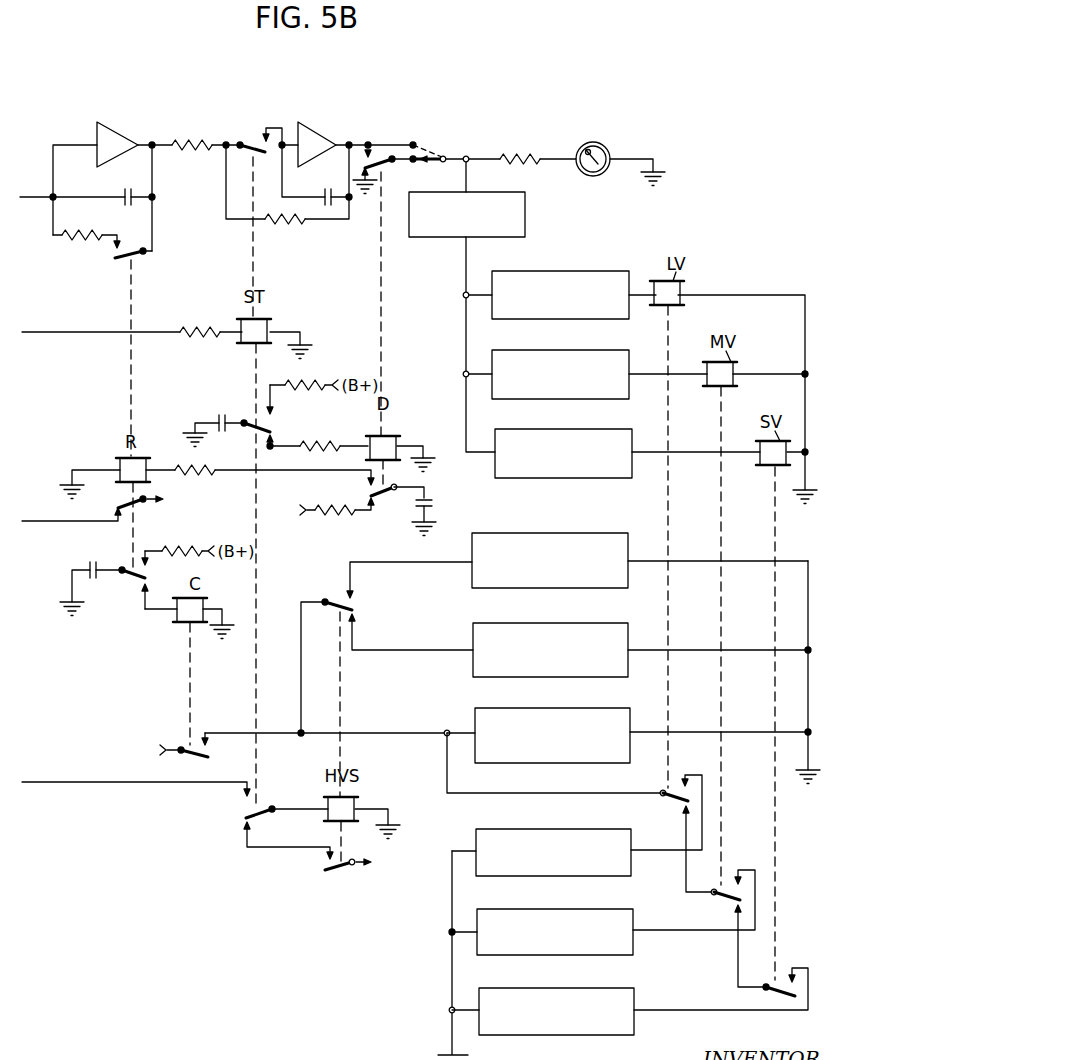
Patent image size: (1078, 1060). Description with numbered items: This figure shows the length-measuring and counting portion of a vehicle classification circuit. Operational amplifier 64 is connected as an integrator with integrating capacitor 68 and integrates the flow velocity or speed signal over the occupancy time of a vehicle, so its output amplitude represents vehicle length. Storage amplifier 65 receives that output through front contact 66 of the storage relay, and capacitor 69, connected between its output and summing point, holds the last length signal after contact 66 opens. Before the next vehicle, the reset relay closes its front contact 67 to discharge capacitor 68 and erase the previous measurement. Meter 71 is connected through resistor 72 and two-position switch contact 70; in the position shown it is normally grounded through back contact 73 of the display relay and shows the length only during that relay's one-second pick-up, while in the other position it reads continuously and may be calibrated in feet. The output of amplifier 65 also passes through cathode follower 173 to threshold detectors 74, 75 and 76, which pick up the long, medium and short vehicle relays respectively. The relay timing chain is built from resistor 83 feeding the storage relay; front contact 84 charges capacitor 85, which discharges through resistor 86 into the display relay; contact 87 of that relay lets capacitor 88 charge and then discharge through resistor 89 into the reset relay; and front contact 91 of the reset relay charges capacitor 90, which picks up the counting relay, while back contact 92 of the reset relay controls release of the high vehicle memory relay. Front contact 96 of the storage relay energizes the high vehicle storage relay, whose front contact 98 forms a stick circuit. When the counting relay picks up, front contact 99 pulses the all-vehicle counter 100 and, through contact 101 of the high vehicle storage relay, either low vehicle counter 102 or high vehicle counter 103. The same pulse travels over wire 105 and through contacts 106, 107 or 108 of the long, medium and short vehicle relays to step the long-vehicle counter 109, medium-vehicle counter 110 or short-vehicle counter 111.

The operational amplifier 64 is at (122, 135).
The storage amplifier 65 is at (321, 135).
The front contact of relay ST 66 is at (253, 143).
The front contact of relay R 67 is at (138, 254).
The integrating capacitor 68 is at (135, 185).
The capacitor 69 is at (289, 184).
The two-position switch contact 70 is at (433, 164).
The meter 71 is at (609, 150).
The resistor 72 is at (514, 153).
The back contact of relay D 73 is at (383, 164).
The cathode follower 173 is at (525, 221).
The threshold detector 74 is at (579, 271).
The threshold detector 75 is at (579, 350).
The threshold detector 76 is at (579, 429).
The resistor 83 is at (198, 326).
The front contact of relay ST 84 is at (261, 432).
The capacitor 85 is at (220, 414).
The resistor 86 is at (320, 444).
The contact of relay D 87 is at (379, 500).
The capacitor 88 is at (433, 502).
The resistor 89 is at (210, 478).
The capacitor 90 is at (93, 561).
The front contact of relay R 91 is at (132, 580).
The back contact of relay R 92 is at (138, 504).
The front contact of relay ST 96 is at (266, 813).
The front contact of relay HVS 98 is at (343, 872).
The front contact of relay C 99 is at (213, 758).
The all-vehicle counter 100 is at (568, 709).
The contact of relay HVS 101 is at (335, 599).
The low vehicle counter 102 is at (568, 624).
The high vehicle counter 103 is at (568, 534).
The wire 105 is at (545, 793).
The contact of relay LV 106 is at (680, 810).
The contact of relay MV 107 is at (727, 900).
The contact of relay SV 108 is at (788, 995).
The long-vehicle counter 109 is at (540, 830).
The medium-vehicle counter 110 is at (538, 909).
The short-vehicle counter 111 is at (534, 989).